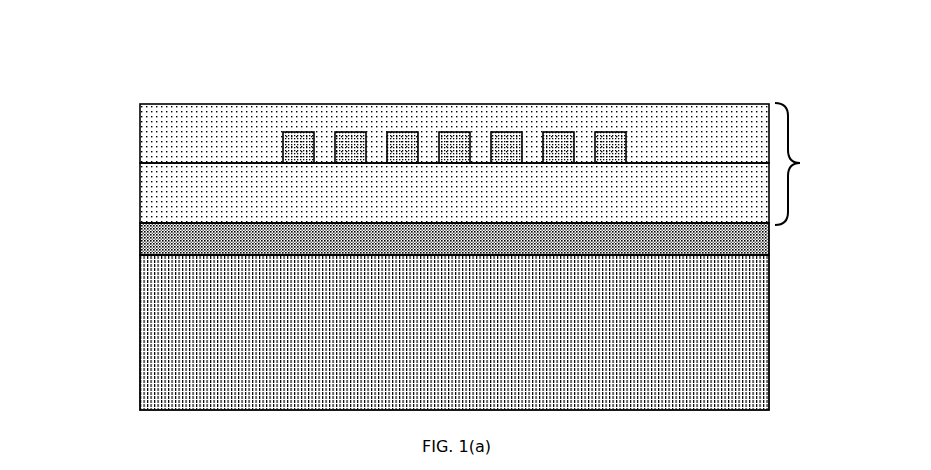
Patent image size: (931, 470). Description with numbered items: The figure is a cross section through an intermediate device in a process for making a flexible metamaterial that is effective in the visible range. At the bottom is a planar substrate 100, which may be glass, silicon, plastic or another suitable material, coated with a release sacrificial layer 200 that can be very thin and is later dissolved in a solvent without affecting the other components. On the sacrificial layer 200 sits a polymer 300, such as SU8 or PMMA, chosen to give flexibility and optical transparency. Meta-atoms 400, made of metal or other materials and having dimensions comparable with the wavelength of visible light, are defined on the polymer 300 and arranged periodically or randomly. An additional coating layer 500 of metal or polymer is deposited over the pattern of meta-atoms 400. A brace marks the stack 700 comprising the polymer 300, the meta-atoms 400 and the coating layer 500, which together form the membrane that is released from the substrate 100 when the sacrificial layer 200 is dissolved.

The planar substrate 100 is at (172, 362).
The release sacrificial layer 200 is at (172, 242).
The polymer 300 is at (172, 195).
The meta-atoms 400 is at (407, 143).
The additional coating layer 500 is at (205, 130).
The cladding structure 700 is at (815, 164).